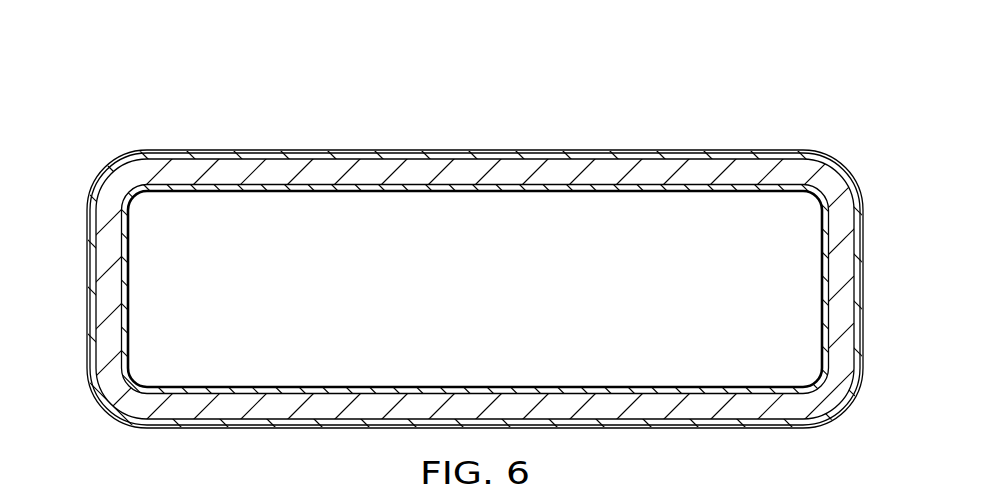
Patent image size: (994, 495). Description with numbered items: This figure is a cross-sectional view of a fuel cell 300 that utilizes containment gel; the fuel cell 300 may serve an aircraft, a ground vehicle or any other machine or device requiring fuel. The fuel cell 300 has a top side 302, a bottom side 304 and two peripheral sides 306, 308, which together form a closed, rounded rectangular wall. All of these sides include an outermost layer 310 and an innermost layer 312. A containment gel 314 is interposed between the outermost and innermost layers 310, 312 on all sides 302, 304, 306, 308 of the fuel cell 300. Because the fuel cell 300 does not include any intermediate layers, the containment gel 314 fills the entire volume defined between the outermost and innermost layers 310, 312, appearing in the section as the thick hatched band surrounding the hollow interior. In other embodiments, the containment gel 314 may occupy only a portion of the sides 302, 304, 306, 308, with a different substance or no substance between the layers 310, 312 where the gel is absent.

The fuel cell 300 is at (745, 84).
The top side 302 is at (352, 150).
The bottom side 304 is at (318, 428).
The peripheral side 306 is at (92, 280).
The peripheral side 308 is at (865, 307).
The outermost layer 310 is at (217, 150).
The innermost layer 312 is at (262, 191).
The containment gel 314 is at (246, 389).